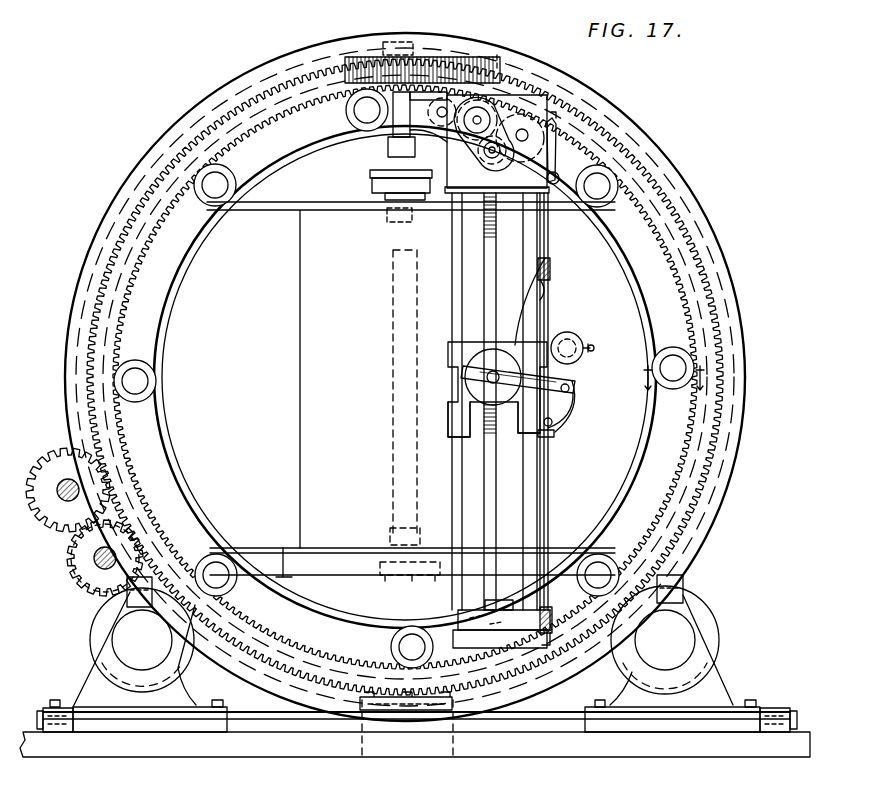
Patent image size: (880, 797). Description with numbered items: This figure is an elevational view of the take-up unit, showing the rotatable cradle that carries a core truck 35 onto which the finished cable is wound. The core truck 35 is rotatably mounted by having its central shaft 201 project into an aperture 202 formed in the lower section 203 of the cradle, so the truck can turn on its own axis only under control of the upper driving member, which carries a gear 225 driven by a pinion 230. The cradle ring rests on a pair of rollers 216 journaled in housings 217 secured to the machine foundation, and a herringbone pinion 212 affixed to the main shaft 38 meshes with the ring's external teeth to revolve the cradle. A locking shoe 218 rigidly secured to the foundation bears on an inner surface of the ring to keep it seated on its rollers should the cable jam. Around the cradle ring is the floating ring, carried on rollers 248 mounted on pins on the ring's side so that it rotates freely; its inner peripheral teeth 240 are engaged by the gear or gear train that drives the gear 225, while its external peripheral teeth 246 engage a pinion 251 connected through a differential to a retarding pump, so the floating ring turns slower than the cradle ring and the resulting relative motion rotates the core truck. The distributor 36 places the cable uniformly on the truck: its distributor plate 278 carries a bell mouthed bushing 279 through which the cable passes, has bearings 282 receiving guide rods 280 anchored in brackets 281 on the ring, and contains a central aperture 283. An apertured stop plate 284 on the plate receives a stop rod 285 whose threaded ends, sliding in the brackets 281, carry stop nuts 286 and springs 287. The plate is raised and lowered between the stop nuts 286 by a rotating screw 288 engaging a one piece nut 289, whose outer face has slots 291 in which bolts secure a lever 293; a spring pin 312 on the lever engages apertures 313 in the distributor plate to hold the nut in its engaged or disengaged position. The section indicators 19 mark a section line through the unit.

The gear 225 is at (340, 68).
The pinion 230 is at (500, 55).
The external peripheral teeth 246 is at (648, 178).
The inner peripheral teeth 240 is at (672, 232).
The rollers 248 is at (156, 380).
The section line indicator 19 is at (670, 365).
The core truck 35 is at (300, 442).
The lower section of the cradle 203 is at (283, 548).
The central shaft 201 is at (393, 270).
The aperture 202 is at (390, 540).
The distributor 36 is at (570, 318).
The brackets 281 is at (458, 620).
The guide rods 280 is at (465, 290).
The stop rod 285 is at (543, 485).
The rotating screw 288 is at (490, 512).
The stop nuts 286 is at (546, 258).
The springs 287 is at (546, 280).
The one piece nut 289 is at (483, 406).
The aperture 283 is at (492, 352).
The slots 291 is at (475, 383).
The lever 293 is at (560, 381).
The spring pin 312 is at (569, 389).
The apertures 313 is at (553, 419).
The apertured stop plate 284 is at (552, 435).
The bearings 282 is at (462, 420).
The distributor plate 278 is at (515, 345).
The bell mouthed bushing 279 is at (578, 333).
The herringbone pinion 212 is at (66, 450).
The main shaft 38 is at (65, 502).
The pinion 251 is at (80, 580).
The rollers 216 is at (98, 618).
The housings 217 is at (98, 672).
The locking shoe 218 is at (455, 742).